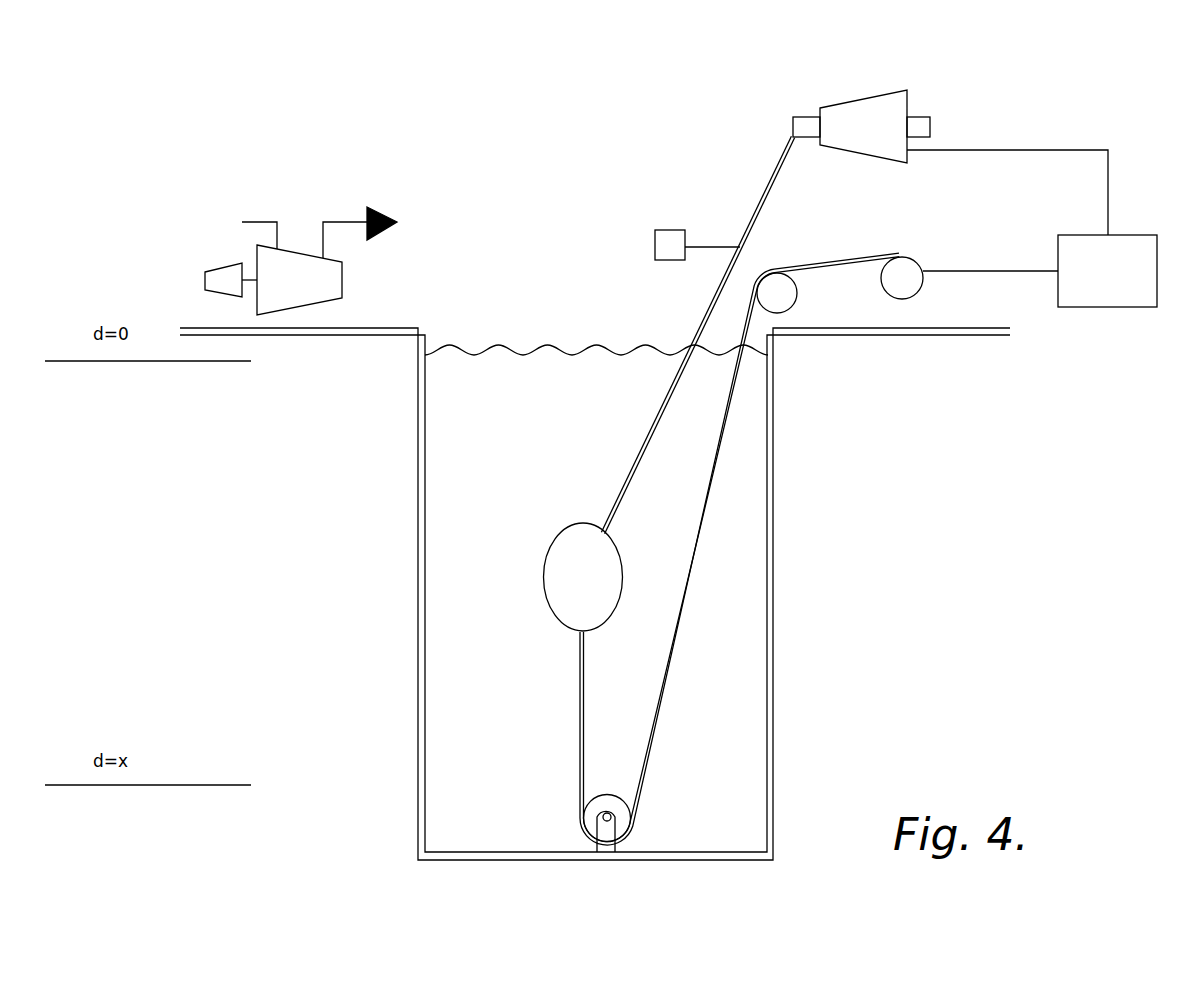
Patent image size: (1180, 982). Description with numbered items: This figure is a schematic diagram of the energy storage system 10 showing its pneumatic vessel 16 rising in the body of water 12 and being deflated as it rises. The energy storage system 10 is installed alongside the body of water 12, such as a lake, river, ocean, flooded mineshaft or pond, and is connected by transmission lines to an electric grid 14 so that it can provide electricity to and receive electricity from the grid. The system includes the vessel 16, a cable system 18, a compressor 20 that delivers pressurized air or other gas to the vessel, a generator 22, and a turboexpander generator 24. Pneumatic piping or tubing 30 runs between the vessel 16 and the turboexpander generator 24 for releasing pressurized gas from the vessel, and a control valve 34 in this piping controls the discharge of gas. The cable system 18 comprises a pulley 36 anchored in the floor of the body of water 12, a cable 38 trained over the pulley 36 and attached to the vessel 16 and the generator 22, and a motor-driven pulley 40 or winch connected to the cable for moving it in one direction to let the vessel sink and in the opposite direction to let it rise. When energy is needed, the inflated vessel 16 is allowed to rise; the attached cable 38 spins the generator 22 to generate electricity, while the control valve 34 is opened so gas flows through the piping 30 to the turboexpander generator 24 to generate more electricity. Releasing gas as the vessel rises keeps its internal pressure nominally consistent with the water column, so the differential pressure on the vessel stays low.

The energy storage system 10 is at (636, 146).
The body of water 12 is at (555, 742).
The electric grid 14 is at (1140, 240).
The pneumatic vessel 16 is at (565, 525).
The cable system 18 is at (710, 568).
The compressor 20 is at (300, 295).
The generator 22 is at (910, 297).
The turboexpander generator 24 is at (898, 106).
The pneumatic piping or tubing 30 is at (653, 430).
The control valve 34 is at (653, 238).
The pulley 36 is at (615, 840).
The cable 38 is at (677, 625).
The motor-driven pulley 40 is at (780, 305).